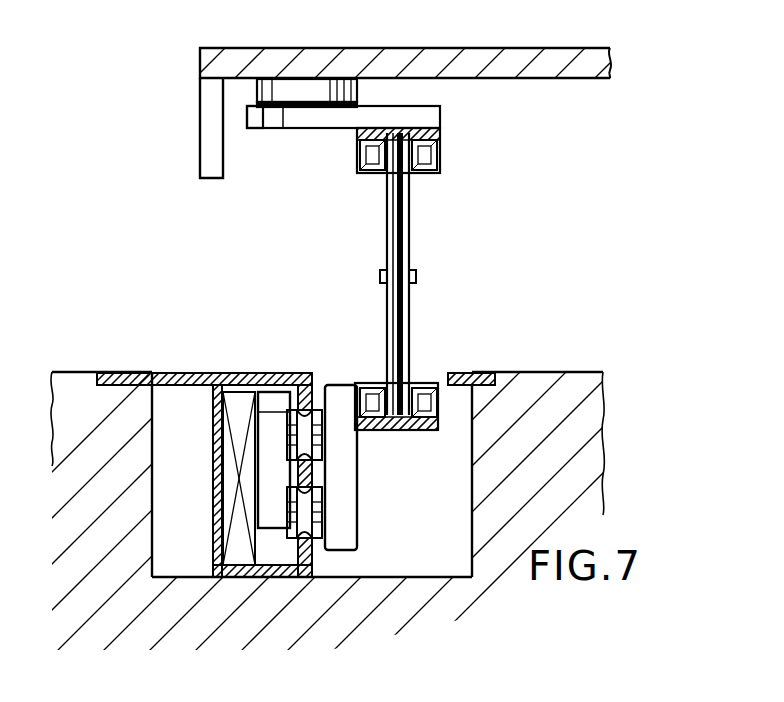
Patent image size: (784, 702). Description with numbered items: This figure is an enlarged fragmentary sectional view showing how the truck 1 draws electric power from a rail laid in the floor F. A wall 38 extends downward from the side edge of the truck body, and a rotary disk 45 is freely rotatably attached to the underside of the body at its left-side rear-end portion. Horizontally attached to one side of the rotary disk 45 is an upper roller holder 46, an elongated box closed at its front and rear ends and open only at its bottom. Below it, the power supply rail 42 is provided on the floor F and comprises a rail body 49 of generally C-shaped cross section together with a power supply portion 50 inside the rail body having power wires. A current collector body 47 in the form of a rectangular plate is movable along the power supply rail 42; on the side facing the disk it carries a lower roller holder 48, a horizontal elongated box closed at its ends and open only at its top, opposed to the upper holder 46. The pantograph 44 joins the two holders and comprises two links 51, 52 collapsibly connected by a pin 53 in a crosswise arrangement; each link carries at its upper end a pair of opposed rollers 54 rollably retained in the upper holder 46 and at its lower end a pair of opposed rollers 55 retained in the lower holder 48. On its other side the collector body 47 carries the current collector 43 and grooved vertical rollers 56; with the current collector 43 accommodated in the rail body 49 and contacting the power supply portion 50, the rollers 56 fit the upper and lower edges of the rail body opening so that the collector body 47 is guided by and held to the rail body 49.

The truck 1 is at (181, 71).
The wall 38 is at (208, 133).
The power supply rail 42 is at (392, 400).
The current collector 43 is at (272, 415).
The pantograph 44 is at (392, 274).
The rotary disk 45 is at (297, 118).
The upper roller holder 46 is at (392, 400).
The current collector body 47 is at (346, 528).
The lower roller holder 48 is at (416, 405).
The rail body 49 is at (221, 463).
The power supply portion 50 is at (240, 512).
The link 51 is at (387, 222).
The link 52 is at (410, 220).
The pin 53 is at (416, 277).
The rollers 54 is at (357, 148).
The rollers 55 is at (370, 431).
The vertical rollers 56 is at (300, 410).
The floor F is at (578, 372).